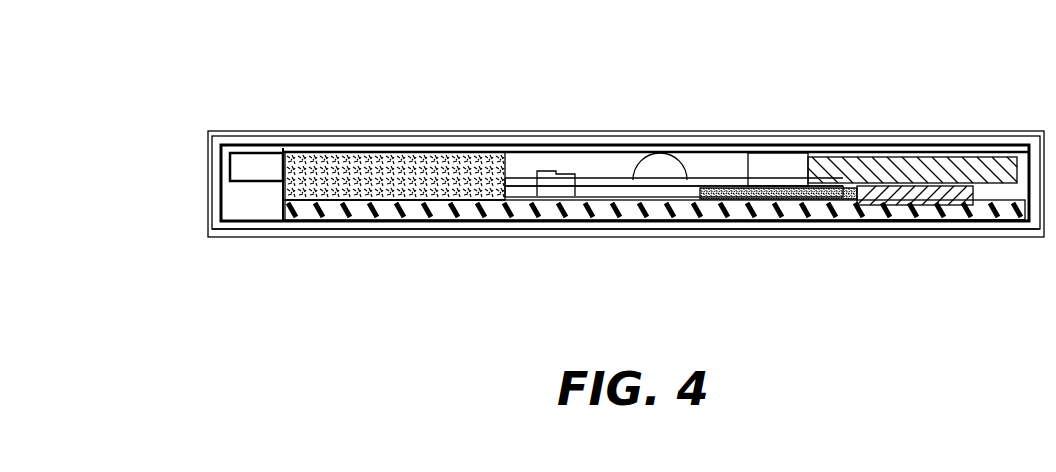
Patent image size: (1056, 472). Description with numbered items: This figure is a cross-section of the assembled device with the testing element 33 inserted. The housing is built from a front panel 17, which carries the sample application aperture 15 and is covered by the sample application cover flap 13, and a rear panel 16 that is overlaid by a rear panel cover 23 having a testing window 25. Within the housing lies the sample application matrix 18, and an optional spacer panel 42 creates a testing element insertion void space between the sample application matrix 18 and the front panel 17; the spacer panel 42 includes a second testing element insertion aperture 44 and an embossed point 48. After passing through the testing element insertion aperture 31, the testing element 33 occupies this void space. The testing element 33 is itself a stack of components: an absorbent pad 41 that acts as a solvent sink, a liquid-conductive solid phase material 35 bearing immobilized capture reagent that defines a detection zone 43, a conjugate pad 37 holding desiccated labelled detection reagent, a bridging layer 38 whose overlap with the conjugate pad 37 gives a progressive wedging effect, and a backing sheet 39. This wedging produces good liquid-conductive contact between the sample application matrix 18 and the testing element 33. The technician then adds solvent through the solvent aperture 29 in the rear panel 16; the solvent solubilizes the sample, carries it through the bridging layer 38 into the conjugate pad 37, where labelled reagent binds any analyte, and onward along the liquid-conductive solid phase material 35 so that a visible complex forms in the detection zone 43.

The sample application cover flap 13 is at (520, 240).
The sample application aperture 15 is at (917, 220).
The rear panel 16 is at (250, 145).
The front panel 17 is at (605, 228).
The sample application matrix 18 is at (992, 155).
The rear panel cover 23 is at (230, 133).
The testing window 25 is at (790, 153).
The solvent aperture 29 is at (918, 153).
The testing element insertion aperture 31 is at (732, 150).
The testing element 33 is at (315, 153).
The liquid-conductive solid phase material 35 is at (616, 190).
The conjugate pad 37 is at (740, 190).
The bridging layer 38 is at (887, 187).
The backing sheet 39 is at (440, 205).
The absorbent pad 41 is at (407, 172).
The spacer panel 42 is at (250, 183).
The detection zone 43 is at (552, 171).
The second testing element insertion aperture 44 is at (519, 178).
The embossed point 48 is at (660, 168).